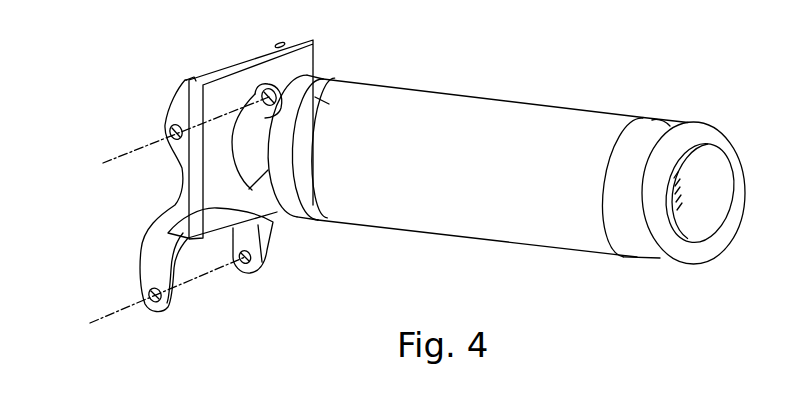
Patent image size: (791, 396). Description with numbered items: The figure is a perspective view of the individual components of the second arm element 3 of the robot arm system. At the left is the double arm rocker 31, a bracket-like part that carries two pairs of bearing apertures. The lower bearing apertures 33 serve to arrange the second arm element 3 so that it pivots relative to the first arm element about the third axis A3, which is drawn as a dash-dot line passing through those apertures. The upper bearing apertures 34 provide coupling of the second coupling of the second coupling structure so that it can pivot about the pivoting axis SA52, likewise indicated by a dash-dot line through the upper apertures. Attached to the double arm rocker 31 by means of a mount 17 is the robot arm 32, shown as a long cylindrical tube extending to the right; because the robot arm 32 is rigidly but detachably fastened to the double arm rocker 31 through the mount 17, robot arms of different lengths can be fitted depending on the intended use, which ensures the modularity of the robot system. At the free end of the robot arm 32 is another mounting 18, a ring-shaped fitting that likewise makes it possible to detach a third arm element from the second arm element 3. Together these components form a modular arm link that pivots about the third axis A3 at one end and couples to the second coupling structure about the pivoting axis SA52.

The second arm element 3 is at (178, 35).
The mount 17 is at (324, 73).
The mounting 18 is at (690, 127).
The double arm rocker 31 is at (270, 224).
The robot arm 32 is at (498, 213).
The bearing apertures 33 is at (248, 270).
The bearing apertures 34 is at (254, 95).
The pivoting axis SA52 is at (103, 163).
The third axis A3 is at (109, 320).